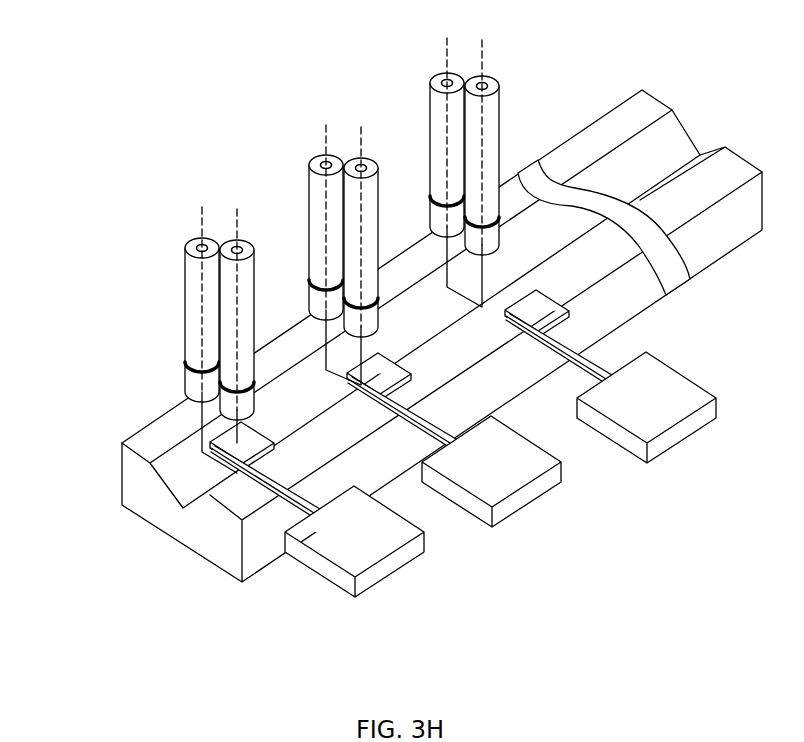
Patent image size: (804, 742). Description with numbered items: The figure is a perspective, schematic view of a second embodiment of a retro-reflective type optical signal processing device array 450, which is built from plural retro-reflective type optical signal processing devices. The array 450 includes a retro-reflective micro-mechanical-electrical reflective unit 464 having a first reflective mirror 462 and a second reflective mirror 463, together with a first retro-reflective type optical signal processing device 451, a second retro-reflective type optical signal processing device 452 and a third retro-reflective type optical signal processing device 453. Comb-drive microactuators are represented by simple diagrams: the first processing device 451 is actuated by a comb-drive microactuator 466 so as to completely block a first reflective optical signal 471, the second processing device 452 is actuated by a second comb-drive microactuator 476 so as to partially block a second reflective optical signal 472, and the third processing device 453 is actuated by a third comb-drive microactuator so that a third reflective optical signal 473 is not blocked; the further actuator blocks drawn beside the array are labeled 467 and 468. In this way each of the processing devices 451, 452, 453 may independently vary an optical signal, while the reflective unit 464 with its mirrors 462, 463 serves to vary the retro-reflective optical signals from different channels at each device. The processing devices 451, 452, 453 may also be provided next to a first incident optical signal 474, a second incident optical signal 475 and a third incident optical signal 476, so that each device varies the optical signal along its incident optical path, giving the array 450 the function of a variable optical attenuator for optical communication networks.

The retro-reflective type optical signal processing device array 450 is at (104, 223).
The first retro-reflective type optical signal processing device 451 is at (172, 228).
The second retro-reflective type optical signal processing device 452 is at (313, 146).
The third retro-reflective type optical signal processing device 453 is at (425, 60).
The first reflective mirror 462 is at (676, 135).
The second reflective mirror 463 is at (712, 148).
The retro-reflective micro-mechanical-electrical reflective unit 464 is at (782, 113).
The comb-drive microactuator 466 is at (403, 557).
The second device 467 is at (528, 505).
The third device 468 is at (697, 430).
The first reflective optical signal 471 is at (236, 471).
The second reflective optical signal 472 is at (360, 390).
The third reflective optical signal 473 is at (483, 283).
The first incident optical signal 474 is at (197, 407).
The second incident optical signal 475 is at (327, 323).
The second comb-drive microactuator 476 is at (442, 245).